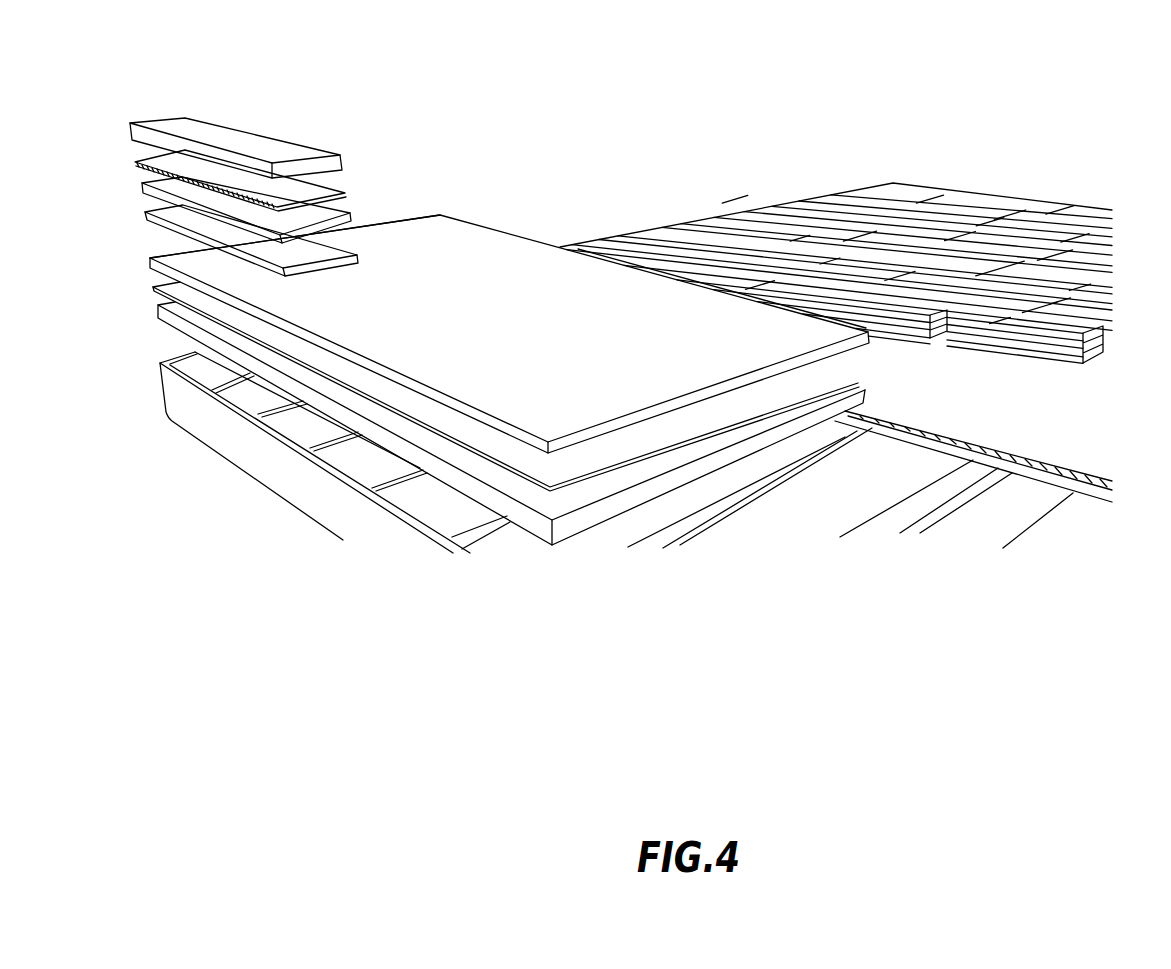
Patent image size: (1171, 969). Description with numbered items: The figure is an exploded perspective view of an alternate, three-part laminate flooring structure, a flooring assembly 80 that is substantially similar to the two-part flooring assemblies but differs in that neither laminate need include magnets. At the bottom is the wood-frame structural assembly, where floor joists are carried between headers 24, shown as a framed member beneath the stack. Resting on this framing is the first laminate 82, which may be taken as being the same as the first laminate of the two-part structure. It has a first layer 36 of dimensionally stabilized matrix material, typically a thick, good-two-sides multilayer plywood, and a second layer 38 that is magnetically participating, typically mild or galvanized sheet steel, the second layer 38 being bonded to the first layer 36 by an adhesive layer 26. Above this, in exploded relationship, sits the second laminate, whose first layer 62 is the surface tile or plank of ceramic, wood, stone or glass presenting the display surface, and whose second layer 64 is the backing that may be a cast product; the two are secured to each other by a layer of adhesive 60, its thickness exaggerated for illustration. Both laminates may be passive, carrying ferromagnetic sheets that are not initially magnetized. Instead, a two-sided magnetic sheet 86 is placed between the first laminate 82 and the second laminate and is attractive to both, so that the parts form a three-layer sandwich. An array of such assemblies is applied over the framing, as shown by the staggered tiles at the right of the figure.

The headers 24 is at (332, 500).
The adhesive layer 26 is at (188, 294).
The first layer 36 is at (202, 335).
The second layer 38 is at (464, 226).
The layer of adhesive 60 is at (307, 192).
The first layer 62 is at (192, 131).
The second layer 64 is at (323, 223).
The flooring assembly 80 is at (793, 250).
The first laminate 82 is at (268, 151).
The magnetic sheet 86 is at (458, 252).